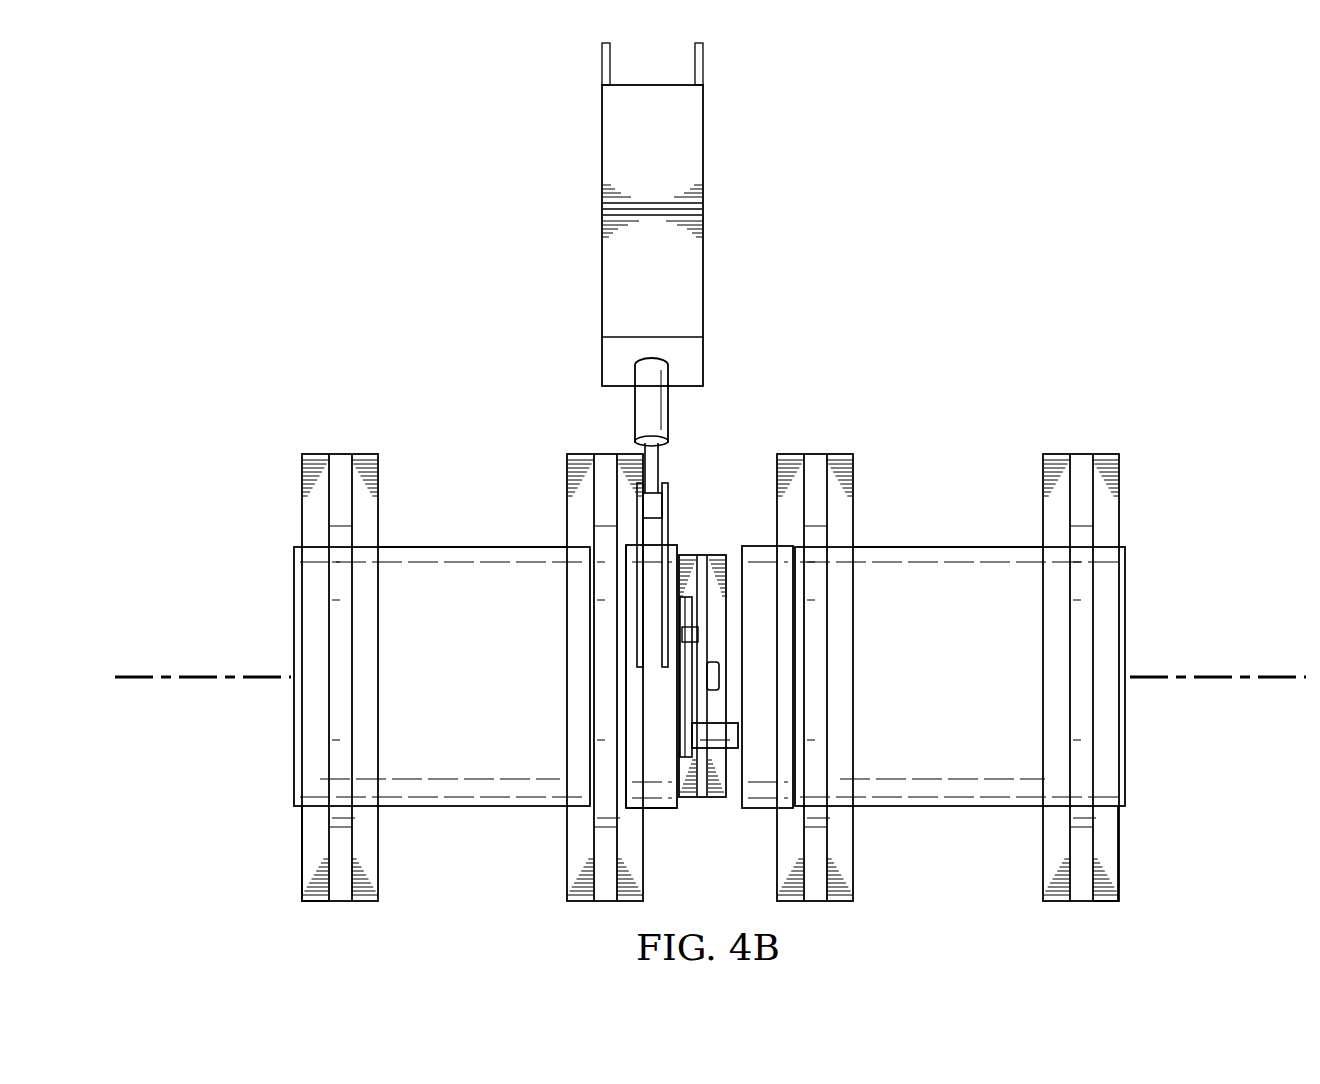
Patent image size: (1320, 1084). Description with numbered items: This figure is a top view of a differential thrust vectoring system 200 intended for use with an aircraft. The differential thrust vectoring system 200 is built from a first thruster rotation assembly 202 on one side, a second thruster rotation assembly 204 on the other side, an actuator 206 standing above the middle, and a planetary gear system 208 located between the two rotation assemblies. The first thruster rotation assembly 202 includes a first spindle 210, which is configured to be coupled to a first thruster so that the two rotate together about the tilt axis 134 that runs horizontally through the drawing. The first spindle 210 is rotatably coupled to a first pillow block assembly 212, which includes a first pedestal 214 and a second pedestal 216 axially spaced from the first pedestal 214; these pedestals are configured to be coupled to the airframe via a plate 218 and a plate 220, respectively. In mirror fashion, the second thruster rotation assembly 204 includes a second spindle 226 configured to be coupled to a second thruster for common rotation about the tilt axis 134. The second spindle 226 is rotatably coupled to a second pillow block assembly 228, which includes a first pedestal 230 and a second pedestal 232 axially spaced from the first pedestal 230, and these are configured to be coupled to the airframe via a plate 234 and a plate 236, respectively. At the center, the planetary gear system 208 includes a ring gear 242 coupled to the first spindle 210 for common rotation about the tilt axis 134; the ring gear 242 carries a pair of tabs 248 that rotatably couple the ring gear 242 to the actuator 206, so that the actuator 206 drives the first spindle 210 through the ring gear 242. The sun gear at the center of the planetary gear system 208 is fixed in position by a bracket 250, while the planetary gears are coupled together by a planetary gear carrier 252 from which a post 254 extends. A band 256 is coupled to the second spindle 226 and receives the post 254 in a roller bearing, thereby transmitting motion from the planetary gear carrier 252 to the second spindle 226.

The tilt axis 134 is at (130, 675).
The differential thrust vectoring system 200 is at (240, 100).
The first thruster rotation assembly 202 is at (282, 603).
The second thruster rotation assembly 204 is at (1140, 594).
The actuator 206 is at (602, 136).
The planetary gear system 208 is at (684, 536).
The first spindle 210 is at (460, 546).
The first pillow block assembly 212 is at (317, 442).
The first pedestal 214 is at (620, 668).
The second pedestal 216 is at (345, 718).
The plate 218 is at (567, 862).
The plate 220 is at (303, 860).
The second spindle 226 is at (966, 546).
The second pillow block assembly 228 is at (1083, 442).
The first pedestal 230 is at (818, 672).
The second pedestal 232 is at (1075, 705).
The plate 234 is at (853, 512).
The plate 236 is at (1118, 858).
The ring gear 242 is at (660, 810).
The tabs 248 is at (670, 508).
The bracket 250 is at (712, 623).
The planetary gear carrier 252 is at (690, 702).
The post 254 is at (730, 727).
The band 256 is at (758, 810).